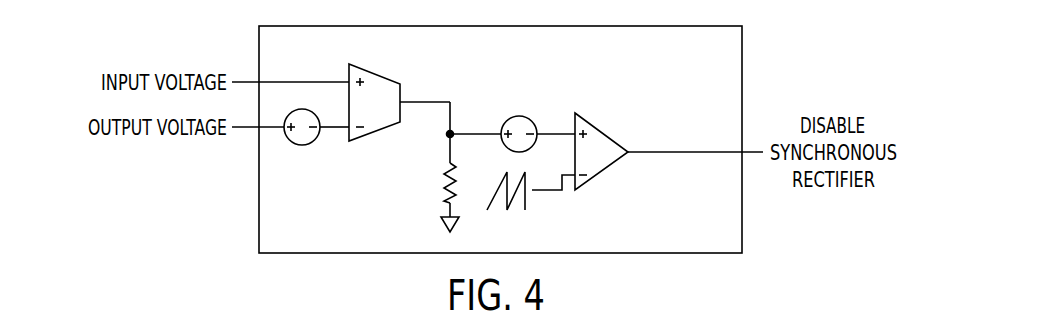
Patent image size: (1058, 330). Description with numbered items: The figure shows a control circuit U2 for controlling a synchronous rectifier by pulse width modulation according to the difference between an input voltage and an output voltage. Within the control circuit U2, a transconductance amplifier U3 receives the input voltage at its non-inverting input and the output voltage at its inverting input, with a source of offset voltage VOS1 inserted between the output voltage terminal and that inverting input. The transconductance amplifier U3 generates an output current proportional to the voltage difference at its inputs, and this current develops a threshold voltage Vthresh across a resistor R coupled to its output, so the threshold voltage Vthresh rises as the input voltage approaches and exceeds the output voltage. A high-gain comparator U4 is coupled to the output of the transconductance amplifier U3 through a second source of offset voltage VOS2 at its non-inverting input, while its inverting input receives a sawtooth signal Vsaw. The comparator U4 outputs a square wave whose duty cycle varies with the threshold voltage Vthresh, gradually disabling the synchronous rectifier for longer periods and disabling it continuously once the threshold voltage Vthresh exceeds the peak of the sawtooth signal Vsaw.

The control circuit U2 is at (703, 88).
The transconductance amplifier U3 is at (374, 102).
The high-gain comparator U4 is at (601, 151).
The source of offset voltage VOS1 is at (302, 141).
The source of offset voltage VOS2 is at (521, 121).
The resistor R is at (441, 197).
The threshold voltage Vthresh is at (443, 88).
The sawtooth signal Vsaw is at (531, 199).